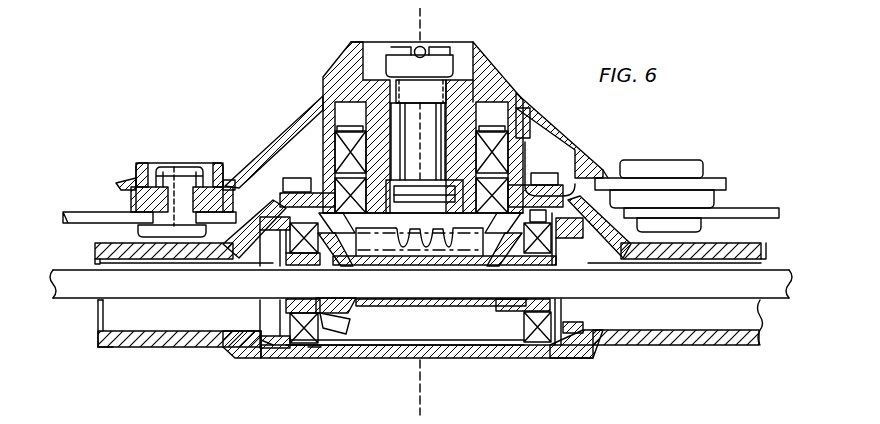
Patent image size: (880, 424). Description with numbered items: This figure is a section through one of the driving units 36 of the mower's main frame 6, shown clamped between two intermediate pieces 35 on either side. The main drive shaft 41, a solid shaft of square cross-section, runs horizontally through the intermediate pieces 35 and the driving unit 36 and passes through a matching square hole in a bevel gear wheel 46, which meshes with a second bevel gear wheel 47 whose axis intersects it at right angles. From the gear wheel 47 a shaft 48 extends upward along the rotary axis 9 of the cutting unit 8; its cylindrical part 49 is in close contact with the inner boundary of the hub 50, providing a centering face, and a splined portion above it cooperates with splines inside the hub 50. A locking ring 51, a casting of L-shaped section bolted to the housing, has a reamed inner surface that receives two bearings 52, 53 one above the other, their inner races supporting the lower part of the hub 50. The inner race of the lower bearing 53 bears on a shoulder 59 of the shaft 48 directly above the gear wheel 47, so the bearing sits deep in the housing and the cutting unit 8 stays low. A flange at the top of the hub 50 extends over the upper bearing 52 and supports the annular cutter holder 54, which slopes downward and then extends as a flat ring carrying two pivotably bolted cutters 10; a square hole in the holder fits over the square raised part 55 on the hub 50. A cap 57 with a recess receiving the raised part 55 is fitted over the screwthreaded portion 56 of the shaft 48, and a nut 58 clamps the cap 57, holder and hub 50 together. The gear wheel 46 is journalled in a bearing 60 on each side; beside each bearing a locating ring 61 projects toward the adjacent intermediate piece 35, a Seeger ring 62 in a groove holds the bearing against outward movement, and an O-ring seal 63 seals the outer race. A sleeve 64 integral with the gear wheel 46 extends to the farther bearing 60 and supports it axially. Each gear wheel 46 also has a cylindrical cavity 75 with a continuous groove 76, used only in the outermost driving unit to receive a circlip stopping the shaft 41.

The main frame 6 is at (103, 349).
The cutting unit 8 is at (210, 148).
The rotary axis 9 is at (419, 411).
The cutter 10 is at (771, 210).
The intermediate piece 35 is at (132, 348).
The driving unit 36 is at (500, 404).
The main drive shaft 41 is at (95, 302).
The bevel gear wheel 46 is at (340, 348).
The bevel gear wheel 47 is at (425, 264).
The shaft 48 is at (424, 158).
The cylindrical part 49 is at (434, 180).
The hub 50 is at (530, 122).
The locking ring 51 is at (583, 160).
The bearing 52 is at (532, 126).
The bearing 53 is at (522, 168).
The cutter holder 54 is at (282, 132).
The raised part 55 is at (483, 82).
The screwthreaded portion 56 is at (430, 46).
The cap 57 is at (334, 63).
The nut 58 is at (388, 46).
The shoulder 59 is at (464, 212).
The bearing 60 is at (292, 358).
The locating ring 61 is at (250, 352).
The Seeger ring 62 is at (253, 328).
The seal 63 is at (299, 360).
The sleeve 64 is at (436, 304).
The cylindrical cavity 75 is at (299, 266).
The continuous groove 76 is at (280, 266).